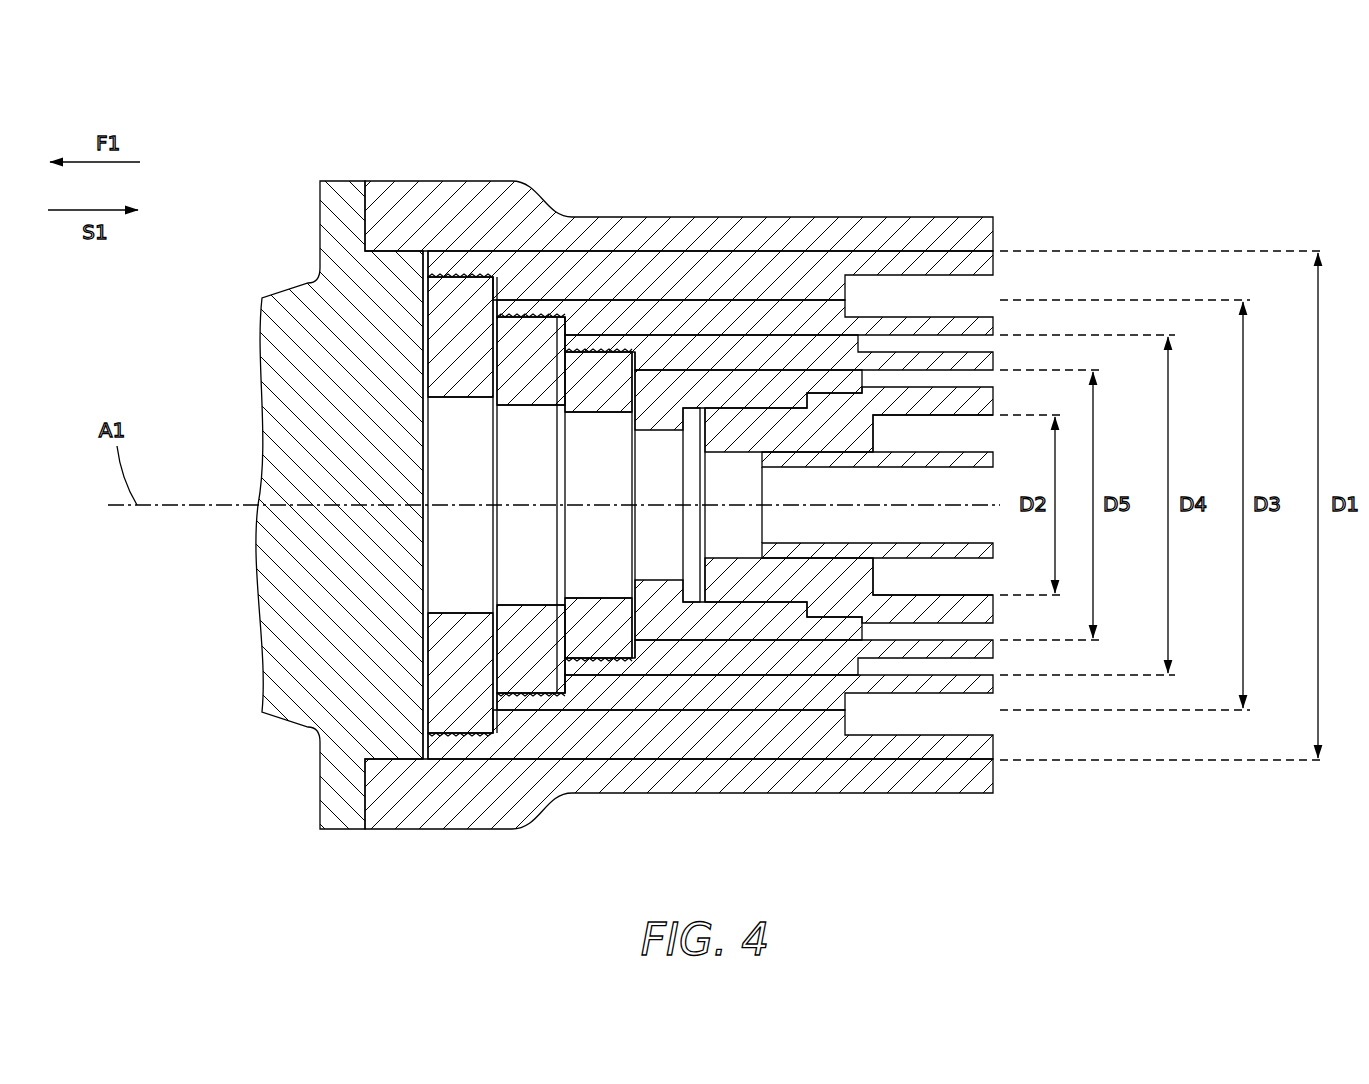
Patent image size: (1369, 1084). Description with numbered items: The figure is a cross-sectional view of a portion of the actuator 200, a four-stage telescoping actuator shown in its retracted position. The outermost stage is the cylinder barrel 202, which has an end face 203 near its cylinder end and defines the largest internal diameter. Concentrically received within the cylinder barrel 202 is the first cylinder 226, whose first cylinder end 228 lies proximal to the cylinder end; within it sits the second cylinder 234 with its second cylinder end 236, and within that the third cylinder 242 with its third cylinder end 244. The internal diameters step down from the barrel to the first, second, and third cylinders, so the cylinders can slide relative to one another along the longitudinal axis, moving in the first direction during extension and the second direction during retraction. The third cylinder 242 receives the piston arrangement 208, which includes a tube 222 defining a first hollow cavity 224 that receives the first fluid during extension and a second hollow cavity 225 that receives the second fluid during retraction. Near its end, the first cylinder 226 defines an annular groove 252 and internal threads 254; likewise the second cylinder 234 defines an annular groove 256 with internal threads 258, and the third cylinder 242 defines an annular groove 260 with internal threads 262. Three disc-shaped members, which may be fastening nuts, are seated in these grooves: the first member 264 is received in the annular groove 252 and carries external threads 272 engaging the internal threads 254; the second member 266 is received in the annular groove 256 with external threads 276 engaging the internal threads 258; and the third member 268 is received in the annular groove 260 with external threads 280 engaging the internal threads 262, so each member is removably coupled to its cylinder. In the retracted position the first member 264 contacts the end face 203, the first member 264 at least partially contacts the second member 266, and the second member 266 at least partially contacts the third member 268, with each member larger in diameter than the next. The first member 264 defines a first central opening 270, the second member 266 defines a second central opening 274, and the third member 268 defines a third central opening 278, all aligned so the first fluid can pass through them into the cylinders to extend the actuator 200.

The actuator 200 is at (673, 465).
The cylinder barrel 202 is at (392, 195).
The end face 203 is at (443, 363).
The piston arrangement 208 is at (1003, 395).
The tube 222 is at (849, 375).
The first hollow cavity 224 is at (920, 485).
The second hollow cavity 225 is at (943, 430).
The first cylinder 226 is at (600, 280).
The first cylinder end 228 is at (400, 275).
The second cylinder 234 is at (832, 702).
The second cylinder end 236 is at (499, 718).
The third cylinder 242 is at (928, 645).
The third cylinder end 244 is at (574, 311).
The annular groove 252 is at (468, 298).
The internal threads 254 is at (347, 489).
The annular groove 256 is at (374, 528).
The internal threads 258 is at (547, 694).
The annular groove 260 is at (452, 501).
The internal threads 262 is at (600, 660).
The first member 264 is at (437, 650).
The second member 266 is at (513, 388).
The third member 268 is at (615, 612).
The first central opening 270 is at (453, 459).
The external threads 272 is at (438, 270).
The second central opening 274 is at (517, 487).
The external threads 276 is at (558, 694).
The third central opening 278 is at (577, 530).
The external threads 280 is at (615, 350).